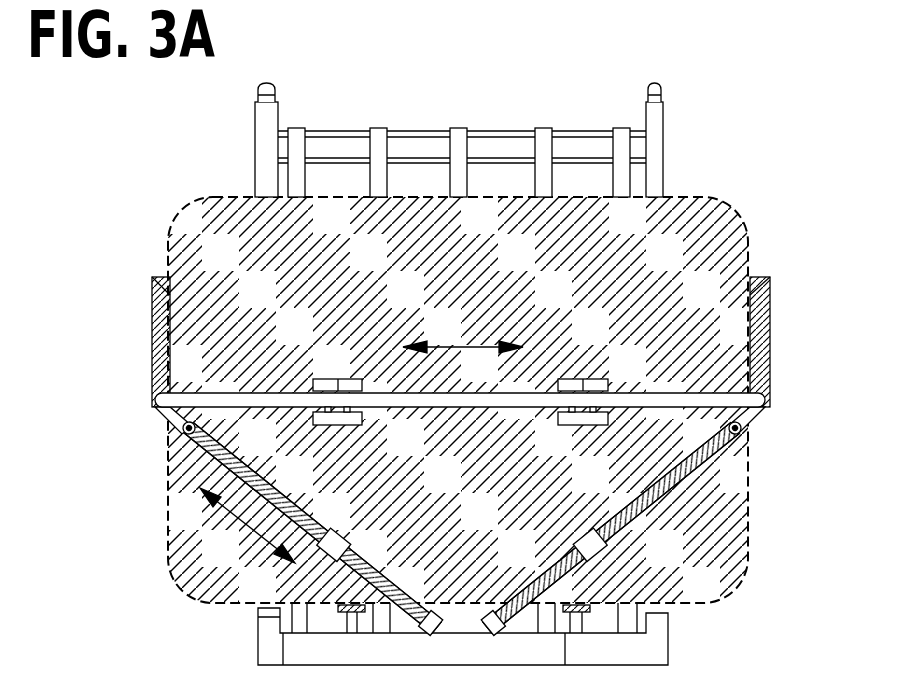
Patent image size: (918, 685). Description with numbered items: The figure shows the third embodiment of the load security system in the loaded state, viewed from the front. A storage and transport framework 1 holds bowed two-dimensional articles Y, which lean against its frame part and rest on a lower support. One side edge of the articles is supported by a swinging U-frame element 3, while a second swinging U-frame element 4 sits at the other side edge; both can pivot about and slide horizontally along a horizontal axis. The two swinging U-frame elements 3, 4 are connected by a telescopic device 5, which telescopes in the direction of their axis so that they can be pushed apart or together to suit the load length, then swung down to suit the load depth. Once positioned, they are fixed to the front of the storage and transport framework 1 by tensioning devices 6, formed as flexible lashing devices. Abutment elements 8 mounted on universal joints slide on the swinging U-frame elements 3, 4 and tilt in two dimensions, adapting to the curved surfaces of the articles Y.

The storage and transport framework 1 is at (492, 132).
The bowed two-dimensional articles Y is at (762, 216).
The swinging U-frame element 3 is at (770, 328).
The swinging U-frame element 4 is at (152, 345).
The telescopic device 5 is at (460, 410).
The tensioning devices 6 is at (337, 528).
The abutment elements 8 is at (338, 380).